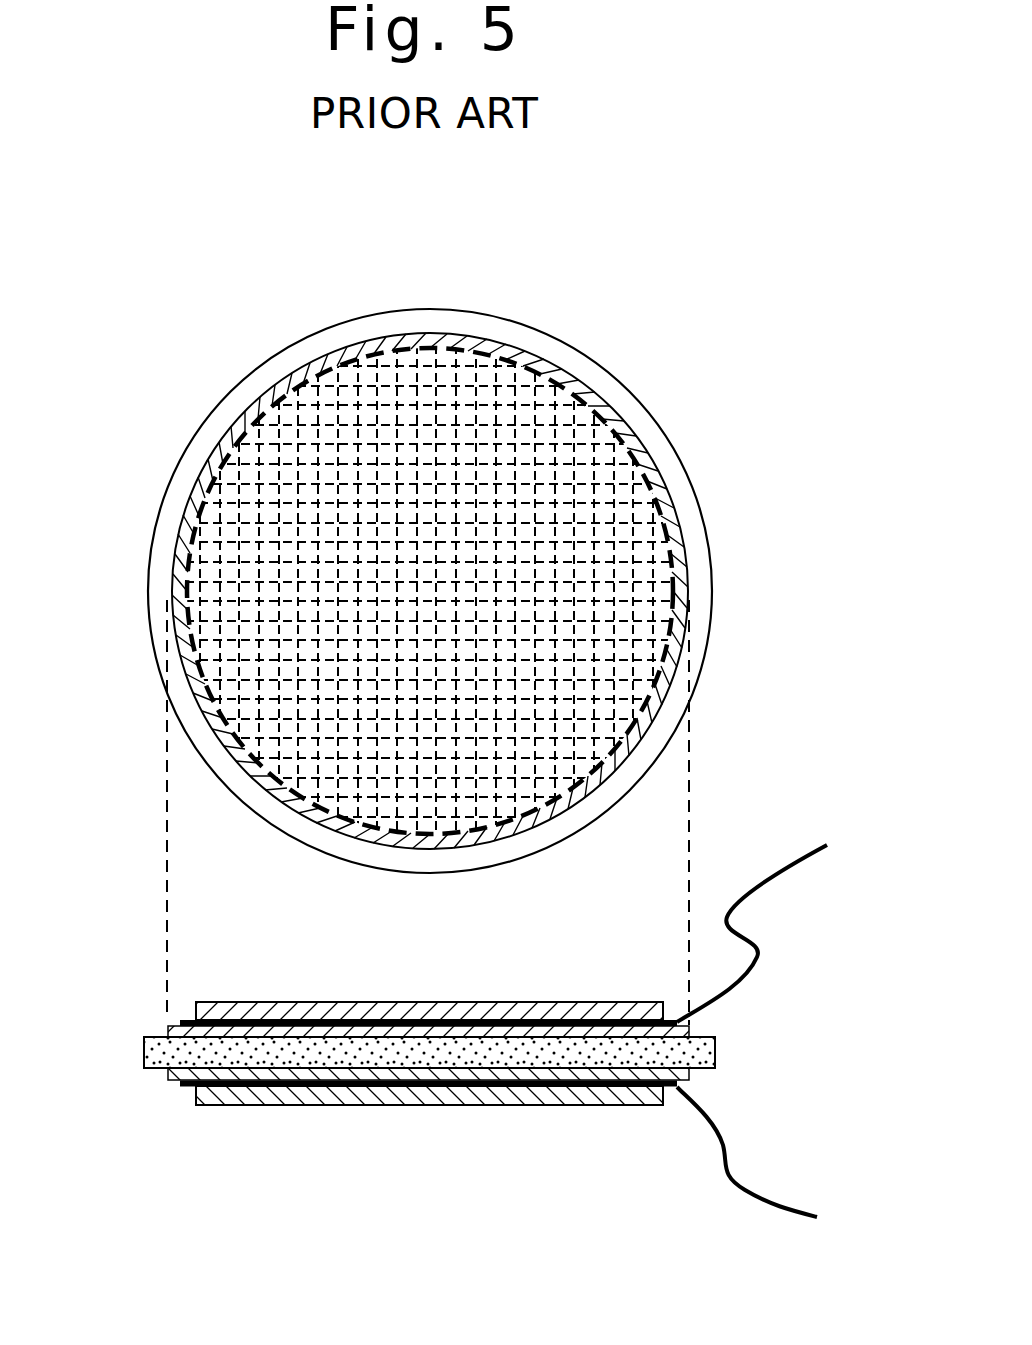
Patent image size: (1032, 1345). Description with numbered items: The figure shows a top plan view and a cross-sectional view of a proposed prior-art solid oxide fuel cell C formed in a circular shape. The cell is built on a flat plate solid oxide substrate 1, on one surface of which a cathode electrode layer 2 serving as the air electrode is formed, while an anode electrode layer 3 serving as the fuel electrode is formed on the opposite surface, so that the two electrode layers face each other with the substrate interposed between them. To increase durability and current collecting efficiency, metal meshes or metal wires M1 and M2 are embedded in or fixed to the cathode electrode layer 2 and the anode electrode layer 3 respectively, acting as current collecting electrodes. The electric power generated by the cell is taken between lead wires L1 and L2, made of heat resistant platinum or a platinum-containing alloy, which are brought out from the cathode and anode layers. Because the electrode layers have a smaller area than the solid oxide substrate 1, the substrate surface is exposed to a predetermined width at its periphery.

The solid oxide substrate 1 is at (183, 448).
The cathode electrode layer 2 is at (670, 482).
The anode electrode layer 3 is at (379, 1106).
The metal mesh or metal wire M1 is at (647, 587).
The metal mesh or metal wire M2 is at (567, 1107).
The solid oxide fuel cell C is at (687, 397).
The lead wire L1 is at (775, 925).
The lead wire L2 is at (772, 1166).